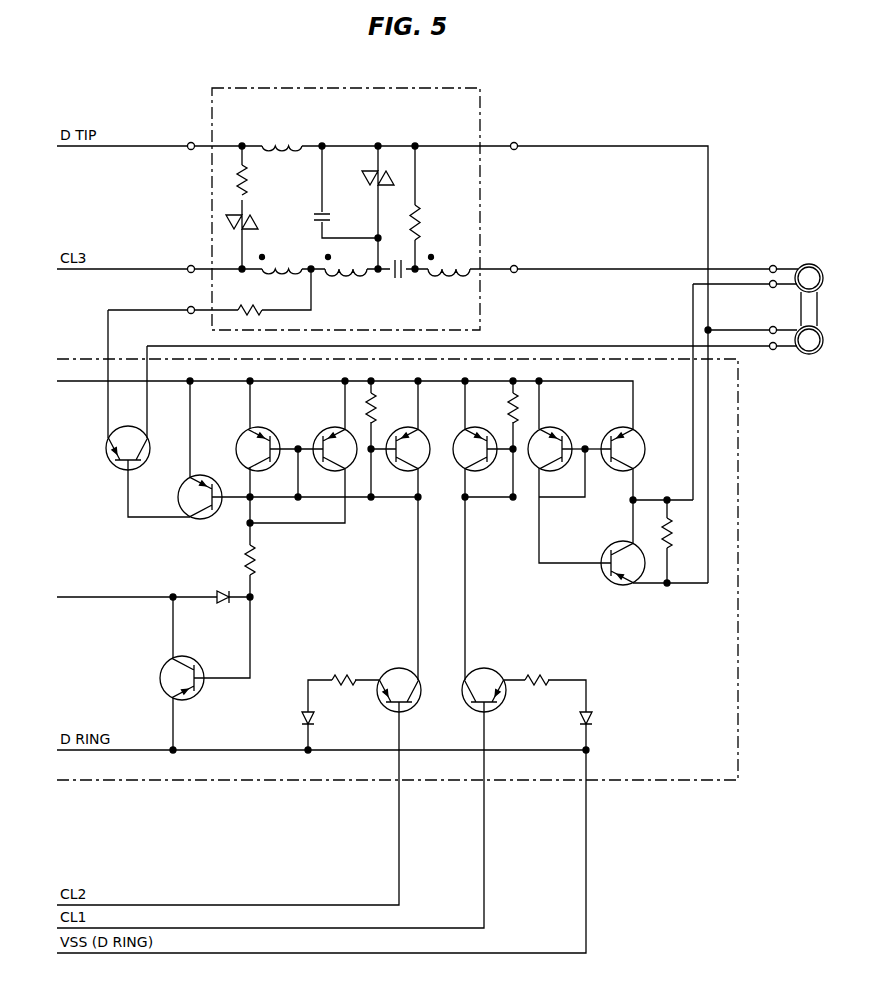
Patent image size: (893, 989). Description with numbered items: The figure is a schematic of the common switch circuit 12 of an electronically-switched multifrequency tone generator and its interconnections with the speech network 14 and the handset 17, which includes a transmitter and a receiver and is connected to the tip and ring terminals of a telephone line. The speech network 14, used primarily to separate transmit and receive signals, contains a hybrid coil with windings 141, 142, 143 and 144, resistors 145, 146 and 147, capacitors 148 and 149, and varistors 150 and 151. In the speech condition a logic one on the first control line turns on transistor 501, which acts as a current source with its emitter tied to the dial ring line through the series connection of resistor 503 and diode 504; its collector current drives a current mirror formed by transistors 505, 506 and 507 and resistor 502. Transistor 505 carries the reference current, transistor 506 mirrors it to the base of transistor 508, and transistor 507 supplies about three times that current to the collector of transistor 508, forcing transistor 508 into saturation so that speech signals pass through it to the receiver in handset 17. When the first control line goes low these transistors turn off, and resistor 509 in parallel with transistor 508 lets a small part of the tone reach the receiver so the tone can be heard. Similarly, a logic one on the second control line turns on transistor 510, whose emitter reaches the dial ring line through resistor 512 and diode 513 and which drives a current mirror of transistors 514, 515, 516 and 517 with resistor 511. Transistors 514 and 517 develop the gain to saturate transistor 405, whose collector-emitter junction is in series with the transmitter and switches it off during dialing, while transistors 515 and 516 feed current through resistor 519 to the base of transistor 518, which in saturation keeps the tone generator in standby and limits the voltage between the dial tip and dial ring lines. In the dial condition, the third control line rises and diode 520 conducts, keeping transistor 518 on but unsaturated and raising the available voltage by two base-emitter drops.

The common switch circuit 12 is at (718, 685).
The speech network 14 is at (252, 102).
The handset 17 is at (804, 309).
The hybrid coil winding 141 is at (282, 135).
The hybrid coil winding 142 is at (282, 258).
The hybrid coil winding 143 is at (346, 284).
The hybrid coil winding 144 is at (449, 284).
The resistor 145 is at (256, 180).
The resistor 146 is at (430, 222).
The resistor 147 is at (251, 301).
The capacitor 148 is at (336, 217).
The capacitor 149 is at (399, 280).
The varistor 150 is at (362, 179).
The varistor 151 is at (257, 223).
The transistor 405 is at (114, 448).
The transistor 501 is at (484, 682).
The resistor 502 is at (500, 408).
The resistor 503 is at (537, 670).
The diode 504 is at (601, 721).
The transistor 505 is at (467, 455).
The transistor 506 is at (560, 442).
The transistor 507 is at (638, 449).
The transistor 508 is at (618, 573).
The resistor 509 is at (683, 533).
The transistor 510 is at (399, 682).
The resistor 511 is at (387, 408).
The resistor 512 is at (343, 670).
The diode 513 is at (293, 720).
The transistor 514 is at (420, 444).
The transistor 515 is at (335, 441).
The transistor 516 is at (250, 448).
The transistor 517 is at (200, 508).
The transistor 518 is at (169, 678).
The resistor 519 is at (267, 560).
The diode 520 is at (222, 607).